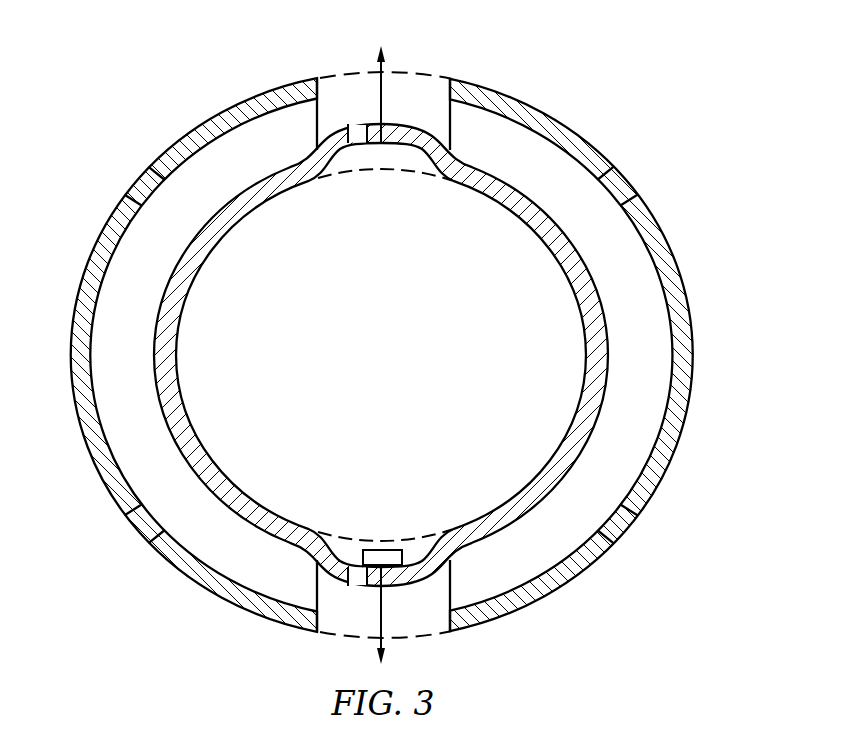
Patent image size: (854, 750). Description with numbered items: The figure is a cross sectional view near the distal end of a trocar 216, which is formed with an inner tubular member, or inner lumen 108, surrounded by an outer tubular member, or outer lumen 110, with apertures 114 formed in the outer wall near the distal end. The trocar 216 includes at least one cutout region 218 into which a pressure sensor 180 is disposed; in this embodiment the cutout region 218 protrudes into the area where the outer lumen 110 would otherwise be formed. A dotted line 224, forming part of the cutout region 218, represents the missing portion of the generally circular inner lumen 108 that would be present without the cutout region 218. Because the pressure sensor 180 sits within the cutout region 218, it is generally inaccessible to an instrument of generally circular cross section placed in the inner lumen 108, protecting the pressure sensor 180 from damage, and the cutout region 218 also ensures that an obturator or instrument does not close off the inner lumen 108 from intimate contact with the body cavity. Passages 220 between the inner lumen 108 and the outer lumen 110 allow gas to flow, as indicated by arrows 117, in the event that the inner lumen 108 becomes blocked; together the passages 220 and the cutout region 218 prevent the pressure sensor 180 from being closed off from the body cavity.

The inner lumen 108 is at (367, 365).
The outer lumen 110 is at (530, 180).
The apertures 114 is at (143, 190).
The arrows 117 is at (388, 100).
The pressure sensor 180 is at (380, 556).
The trocar 216 is at (382, 355).
The cutout region 218 is at (413, 160).
The passages 220 is at (357, 126).
The dotted line 224 is at (358, 170).